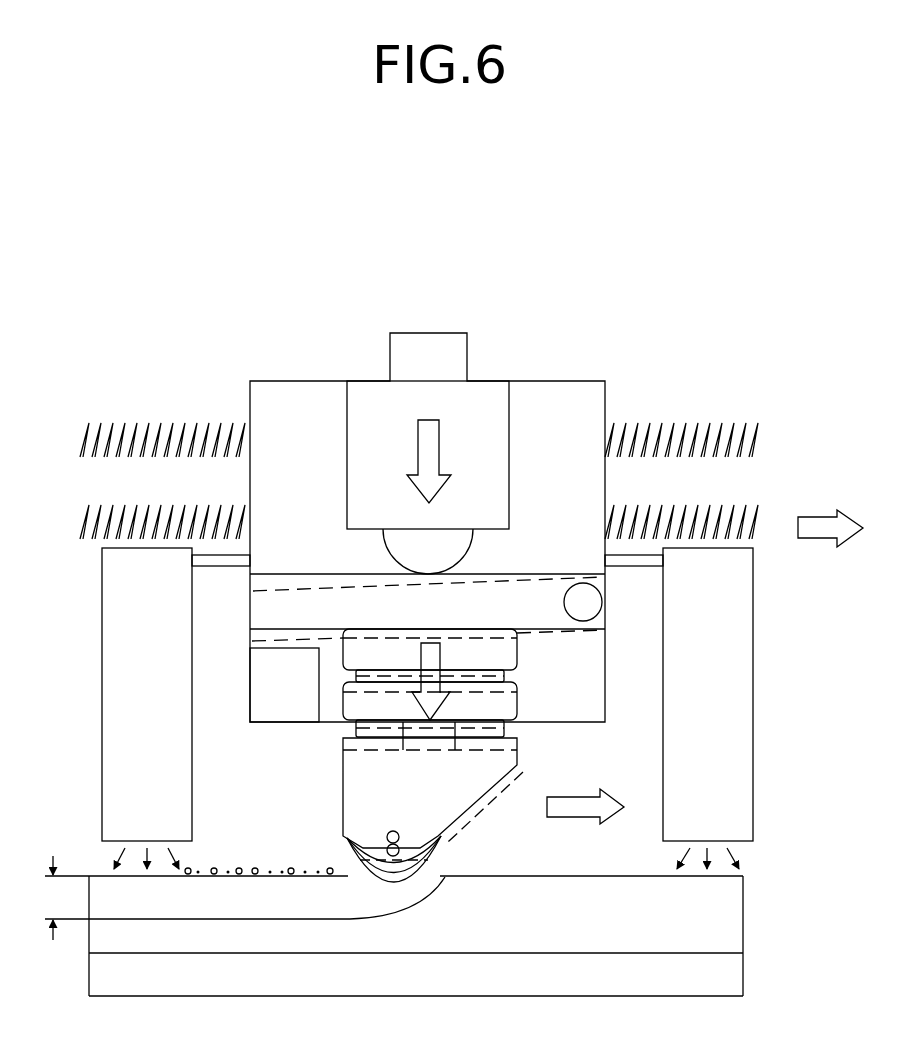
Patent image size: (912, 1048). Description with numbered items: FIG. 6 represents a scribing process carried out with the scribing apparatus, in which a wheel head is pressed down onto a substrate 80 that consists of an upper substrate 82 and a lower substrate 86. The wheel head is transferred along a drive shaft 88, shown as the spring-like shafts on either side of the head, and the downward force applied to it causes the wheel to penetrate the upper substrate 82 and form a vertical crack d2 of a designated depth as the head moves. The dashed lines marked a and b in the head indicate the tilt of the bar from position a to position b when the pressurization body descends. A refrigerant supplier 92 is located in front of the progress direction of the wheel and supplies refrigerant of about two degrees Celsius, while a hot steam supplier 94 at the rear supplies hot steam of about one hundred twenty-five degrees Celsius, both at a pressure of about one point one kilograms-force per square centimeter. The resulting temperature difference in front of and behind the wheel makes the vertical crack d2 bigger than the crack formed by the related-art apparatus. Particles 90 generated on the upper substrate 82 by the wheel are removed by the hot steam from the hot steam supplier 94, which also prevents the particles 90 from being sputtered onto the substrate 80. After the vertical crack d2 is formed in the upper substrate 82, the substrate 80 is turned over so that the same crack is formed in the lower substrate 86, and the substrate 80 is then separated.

The substrate 80 is at (480, 936).
The upper substrate 82 is at (743, 893).
The lower substrate 86 is at (446, 974).
The drive shaft 88 is at (765, 441).
The particles 90 is at (293, 871).
The refrigerant supplier 92 is at (753, 817).
The hot steam supplier 94 is at (102, 755).
The bar tilt start position a is at (250, 574).
The bar tilt end position b is at (251, 592).
The vertical crack d2 is at (50, 898).